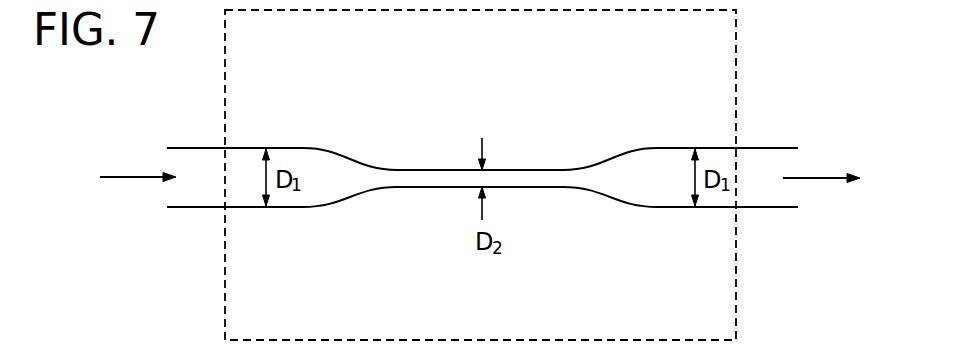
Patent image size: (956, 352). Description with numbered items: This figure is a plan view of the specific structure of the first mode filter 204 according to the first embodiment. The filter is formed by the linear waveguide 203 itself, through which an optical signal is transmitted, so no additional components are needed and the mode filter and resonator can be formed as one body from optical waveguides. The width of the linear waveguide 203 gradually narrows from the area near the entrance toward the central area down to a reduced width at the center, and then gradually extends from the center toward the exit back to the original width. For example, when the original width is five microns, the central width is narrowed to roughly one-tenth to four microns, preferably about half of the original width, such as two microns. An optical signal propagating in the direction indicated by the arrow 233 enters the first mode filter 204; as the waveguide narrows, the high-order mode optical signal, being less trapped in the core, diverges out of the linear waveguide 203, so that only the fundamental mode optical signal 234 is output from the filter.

The linear waveguide 203 is at (195, 197).
The first mode filter 204 is at (736, 50).
The arrow indicating propagation direction of optical signal 233 is at (132, 175).
The fundamental mode optical signal 234 is at (827, 175).